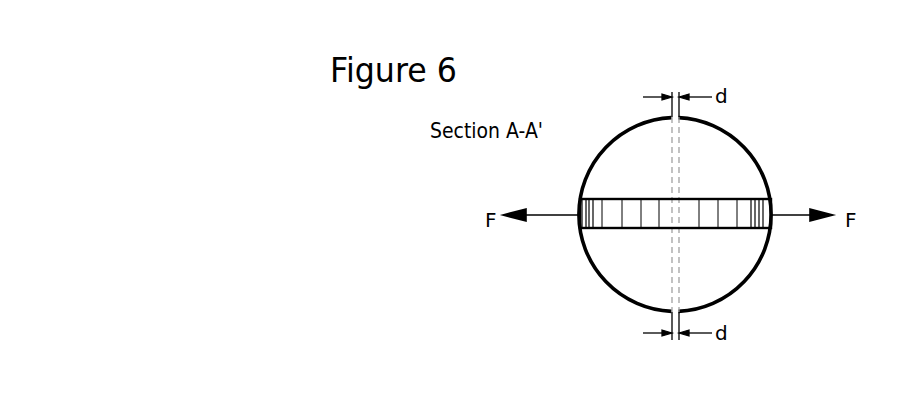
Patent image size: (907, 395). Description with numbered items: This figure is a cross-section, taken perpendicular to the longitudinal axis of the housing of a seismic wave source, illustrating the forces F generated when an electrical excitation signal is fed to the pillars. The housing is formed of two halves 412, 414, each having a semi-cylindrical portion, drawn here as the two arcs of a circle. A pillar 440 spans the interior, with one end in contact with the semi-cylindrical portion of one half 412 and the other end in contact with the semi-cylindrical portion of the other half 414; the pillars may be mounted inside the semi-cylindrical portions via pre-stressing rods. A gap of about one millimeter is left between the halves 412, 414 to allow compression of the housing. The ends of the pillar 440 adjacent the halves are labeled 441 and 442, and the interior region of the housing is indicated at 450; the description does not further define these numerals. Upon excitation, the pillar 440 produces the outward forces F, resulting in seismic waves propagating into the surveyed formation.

The half of the housing 412 is at (584, 186).
The half of the housing 414 is at (760, 263).
The pillar 440 is at (738, 198).
The first end of band 441 is at (580, 228).
The second end of band 442 is at (771, 208).
The interior of tubular member 450 is at (620, 261).